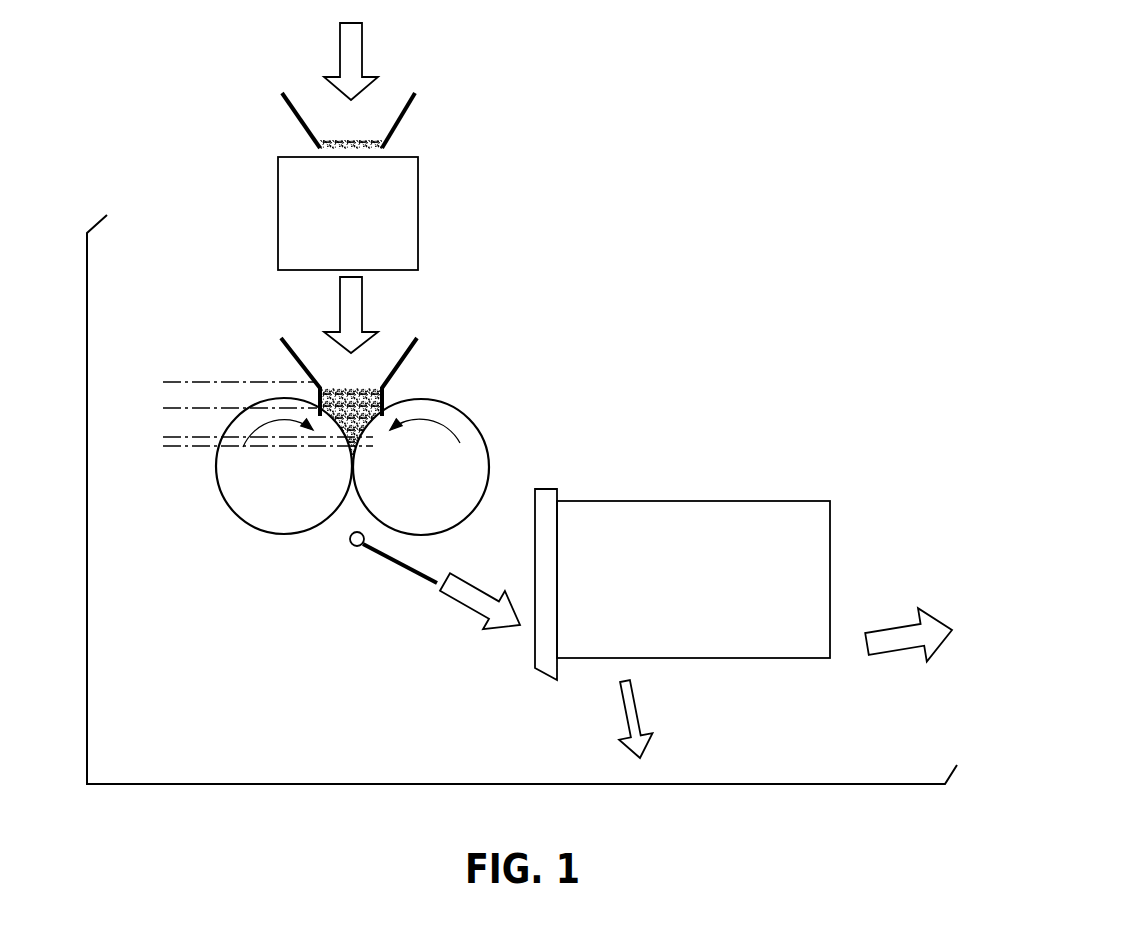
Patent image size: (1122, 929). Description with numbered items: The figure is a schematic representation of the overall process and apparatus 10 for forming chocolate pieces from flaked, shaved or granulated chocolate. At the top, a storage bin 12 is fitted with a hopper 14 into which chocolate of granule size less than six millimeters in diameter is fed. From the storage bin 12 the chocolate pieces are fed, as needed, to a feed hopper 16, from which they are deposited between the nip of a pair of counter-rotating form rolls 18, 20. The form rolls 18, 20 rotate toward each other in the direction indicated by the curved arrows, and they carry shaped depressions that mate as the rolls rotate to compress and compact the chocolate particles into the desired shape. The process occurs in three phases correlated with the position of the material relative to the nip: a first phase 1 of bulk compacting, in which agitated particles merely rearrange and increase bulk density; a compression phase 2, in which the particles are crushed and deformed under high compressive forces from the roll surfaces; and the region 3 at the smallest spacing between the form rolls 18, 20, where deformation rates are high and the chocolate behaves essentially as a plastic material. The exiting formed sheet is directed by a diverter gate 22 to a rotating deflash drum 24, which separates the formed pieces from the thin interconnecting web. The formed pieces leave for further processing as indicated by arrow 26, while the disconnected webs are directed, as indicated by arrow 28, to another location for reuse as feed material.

The apparatus 10 is at (527, 309).
The storage bin 12 is at (418, 203).
The hopper 14 is at (410, 108).
The feed hopper 16 is at (400, 367).
The form roll 18 is at (253, 530).
The form roll 20 is at (487, 448).
The diverter gate 22 is at (390, 558).
The deflash drum 24 is at (757, 500).
The arrow 26 is at (940, 620).
The arrow 28 is at (638, 710).
The first phase 1 is at (159, 407).
The compression phase 2 is at (159, 409).
The smallest spacing between the form rolls 3 is at (163, 443).